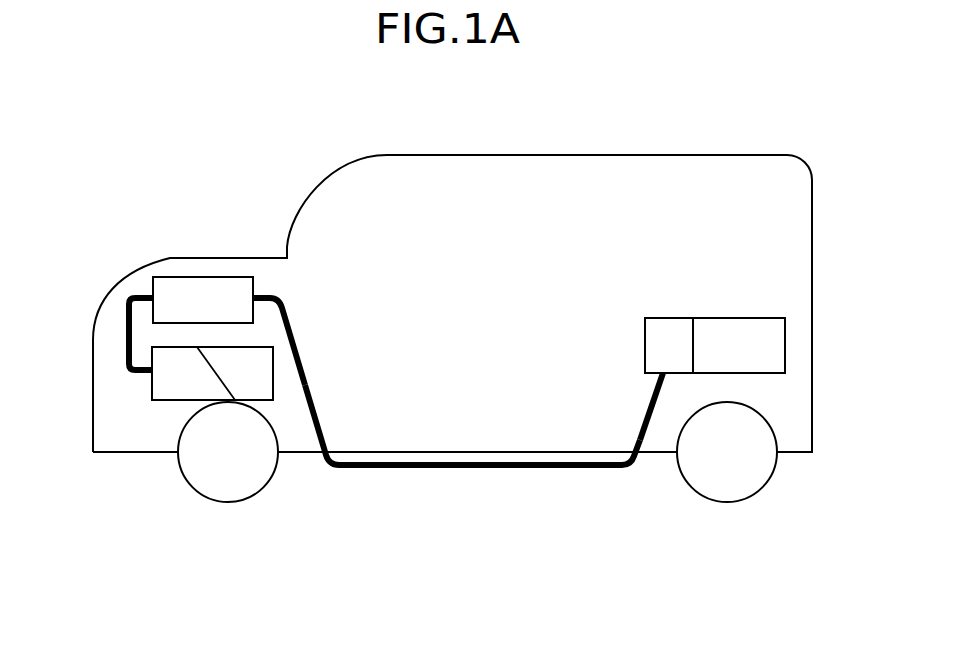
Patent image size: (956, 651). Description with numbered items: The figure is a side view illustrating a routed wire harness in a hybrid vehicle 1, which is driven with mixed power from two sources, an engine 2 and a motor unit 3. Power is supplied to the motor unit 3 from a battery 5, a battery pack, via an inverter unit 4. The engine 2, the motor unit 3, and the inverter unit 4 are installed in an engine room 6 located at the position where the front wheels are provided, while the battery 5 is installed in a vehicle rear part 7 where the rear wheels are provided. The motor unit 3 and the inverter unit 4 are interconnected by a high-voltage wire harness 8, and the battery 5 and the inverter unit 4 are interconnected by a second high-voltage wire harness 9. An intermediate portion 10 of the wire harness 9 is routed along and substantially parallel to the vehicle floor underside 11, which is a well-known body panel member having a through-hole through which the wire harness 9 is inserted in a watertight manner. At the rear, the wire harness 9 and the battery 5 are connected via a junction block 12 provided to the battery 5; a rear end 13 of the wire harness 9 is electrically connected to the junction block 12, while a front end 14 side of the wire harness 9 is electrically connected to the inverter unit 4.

The hybrid vehicle 1 is at (511, 151).
The engine 2 is at (255, 382).
The motor unit 3 is at (182, 382).
The inverter unit 4 is at (176, 288).
The battery 5 is at (742, 327).
The engine room 6 is at (113, 417).
The vehicle rear part 7 is at (787, 417).
The high-voltage wire harness 8 is at (126, 330).
The high-voltage wire harness 9 is at (372, 467).
The intermediate portion 10 is at (495, 470).
The vehicle floor underside 11 is at (556, 456).
The junction block 12 is at (672, 327).
The rear end 13 is at (648, 400).
The front end 14 is at (280, 300).